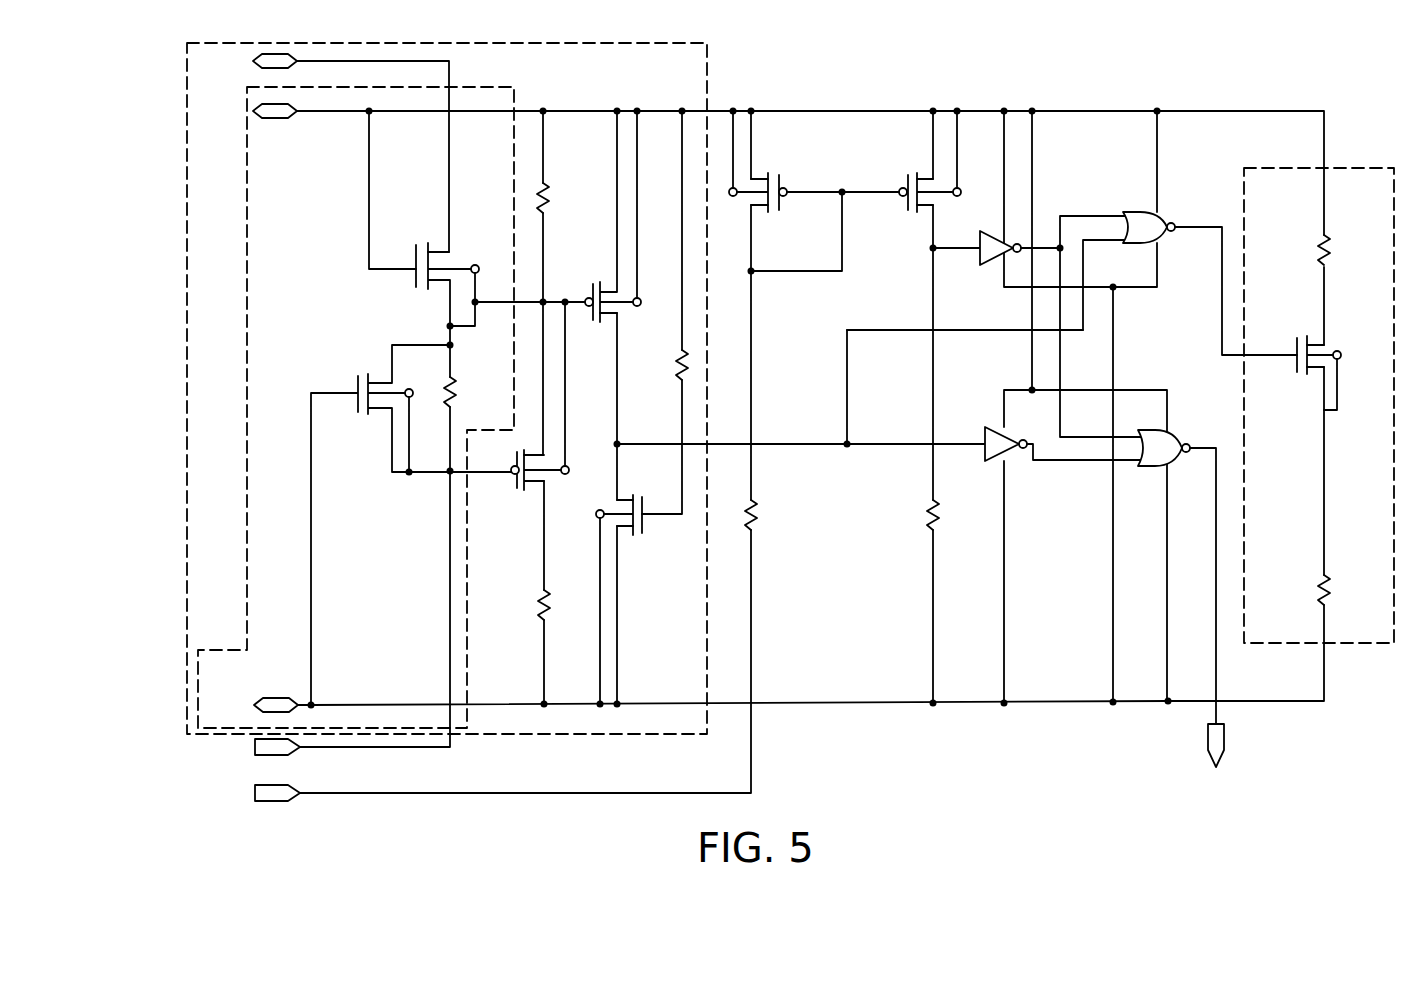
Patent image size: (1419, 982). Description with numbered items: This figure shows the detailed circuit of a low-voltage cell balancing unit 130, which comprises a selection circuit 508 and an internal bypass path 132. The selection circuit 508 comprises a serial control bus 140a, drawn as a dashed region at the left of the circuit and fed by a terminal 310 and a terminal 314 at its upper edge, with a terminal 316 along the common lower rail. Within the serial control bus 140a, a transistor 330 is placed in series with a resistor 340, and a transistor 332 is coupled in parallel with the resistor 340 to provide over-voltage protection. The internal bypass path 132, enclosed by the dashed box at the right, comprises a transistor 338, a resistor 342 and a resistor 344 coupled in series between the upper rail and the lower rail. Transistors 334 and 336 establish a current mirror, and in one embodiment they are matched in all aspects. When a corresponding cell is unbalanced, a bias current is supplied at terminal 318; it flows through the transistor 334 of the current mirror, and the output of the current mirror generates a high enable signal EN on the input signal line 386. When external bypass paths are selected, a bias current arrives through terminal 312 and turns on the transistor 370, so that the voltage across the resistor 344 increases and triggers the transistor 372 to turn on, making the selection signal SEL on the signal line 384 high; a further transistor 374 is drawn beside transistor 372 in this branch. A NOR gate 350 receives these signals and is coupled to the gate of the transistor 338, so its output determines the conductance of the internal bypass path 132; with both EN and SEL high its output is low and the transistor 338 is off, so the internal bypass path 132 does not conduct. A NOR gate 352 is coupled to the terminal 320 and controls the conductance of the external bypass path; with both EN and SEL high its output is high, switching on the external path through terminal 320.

The cell balancing unit 130 is at (73, 35).
The internal bypass path 132 is at (1380, 645).
The serial control bus 140a is at (518, 86).
The selection circuit 508 is at (705, 72).
The terminal 310 is at (323, 150).
The terminal 312 is at (325, 616).
The terminal 314 is at (278, 128).
The terminal 316 is at (684, 707).
The terminal 318 is at (475, 669).
The terminal 320 is at (1216, 762).
The transistor 330 is at (416, 287).
The transistor 332 is at (357, 378).
The transistor 334 is at (782, 190).
The transistor 336 is at (903, 190).
The transistor 338 is at (1297, 348).
The resistor 340 is at (457, 405).
The resistor 342 is at (1334, 263).
The resistor 344 is at (1333, 585).
The NOR gate 350 is at (1173, 222).
The NOR gate 352 is at (1185, 445).
The transistor 370 is at (512, 479).
The transistor 372 is at (589, 297).
The transistor 374 is at (643, 518).
The signal line 384 is at (887, 357).
The input signal line 386 is at (965, 275).